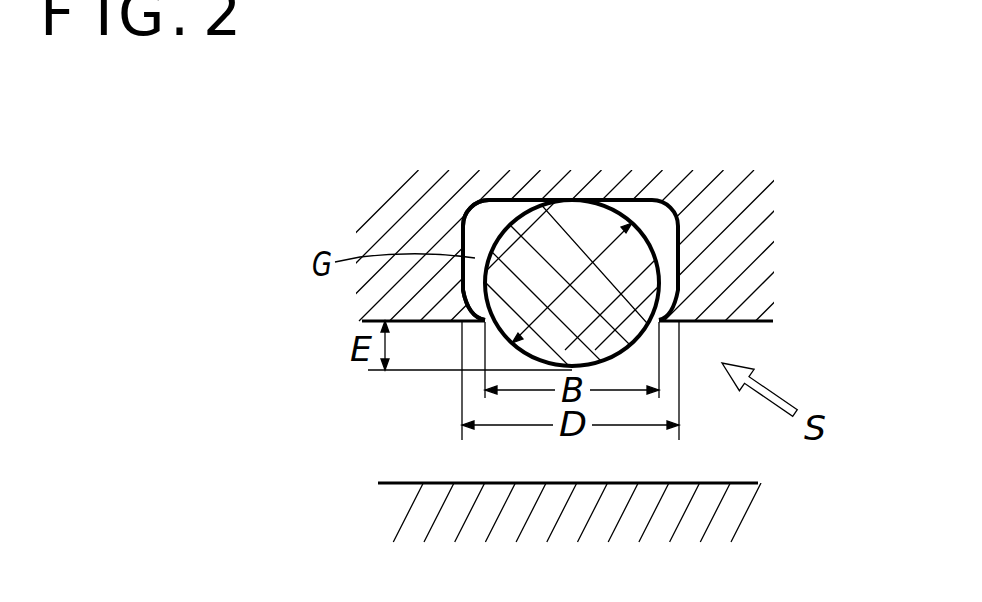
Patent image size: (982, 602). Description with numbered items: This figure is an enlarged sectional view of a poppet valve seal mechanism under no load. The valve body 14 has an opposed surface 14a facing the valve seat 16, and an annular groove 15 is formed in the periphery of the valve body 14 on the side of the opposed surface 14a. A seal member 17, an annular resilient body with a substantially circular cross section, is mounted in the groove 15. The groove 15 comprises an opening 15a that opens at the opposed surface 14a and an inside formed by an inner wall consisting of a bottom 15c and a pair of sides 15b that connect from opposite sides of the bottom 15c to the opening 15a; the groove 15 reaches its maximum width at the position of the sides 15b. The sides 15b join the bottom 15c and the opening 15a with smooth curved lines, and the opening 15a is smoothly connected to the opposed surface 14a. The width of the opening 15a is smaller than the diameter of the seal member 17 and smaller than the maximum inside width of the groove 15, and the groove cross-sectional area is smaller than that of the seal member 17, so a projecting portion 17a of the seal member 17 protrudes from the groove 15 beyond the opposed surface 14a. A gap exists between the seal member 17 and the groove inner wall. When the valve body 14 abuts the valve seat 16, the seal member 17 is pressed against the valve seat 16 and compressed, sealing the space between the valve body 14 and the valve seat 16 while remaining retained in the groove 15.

The valve body 14 is at (397, 232).
The opposed surface 14a is at (721, 326).
The annular groove 15 is at (649, 212).
The opening 15a is at (514, 290).
The sides 15b is at (474, 242).
The bottom 15c is at (512, 200).
The valve seat 16 is at (400, 512).
The seal member 17 is at (563, 234).
The projecting portion 17a is at (668, 300).